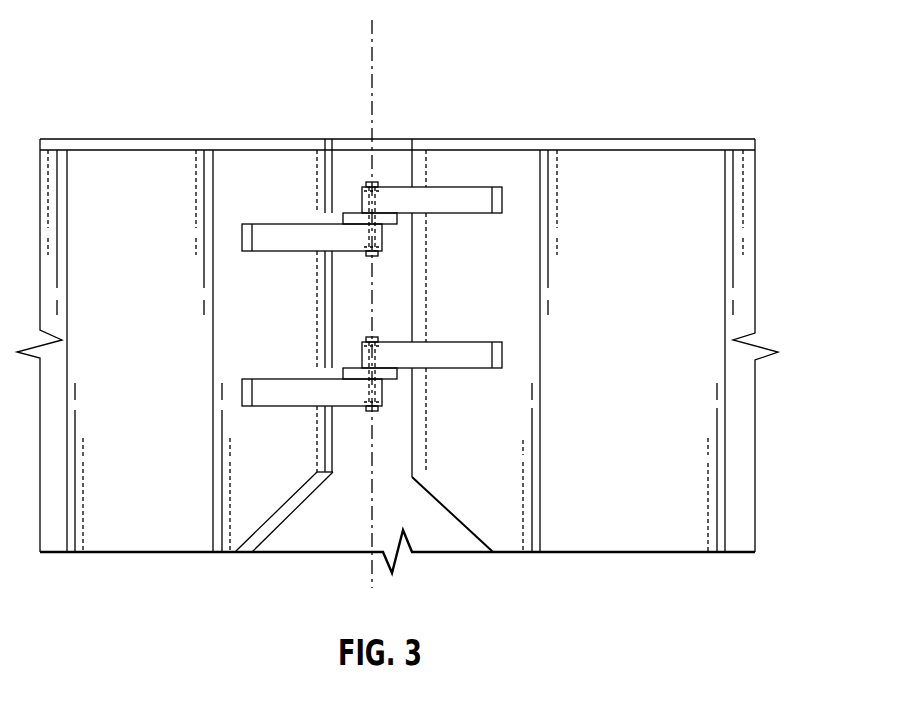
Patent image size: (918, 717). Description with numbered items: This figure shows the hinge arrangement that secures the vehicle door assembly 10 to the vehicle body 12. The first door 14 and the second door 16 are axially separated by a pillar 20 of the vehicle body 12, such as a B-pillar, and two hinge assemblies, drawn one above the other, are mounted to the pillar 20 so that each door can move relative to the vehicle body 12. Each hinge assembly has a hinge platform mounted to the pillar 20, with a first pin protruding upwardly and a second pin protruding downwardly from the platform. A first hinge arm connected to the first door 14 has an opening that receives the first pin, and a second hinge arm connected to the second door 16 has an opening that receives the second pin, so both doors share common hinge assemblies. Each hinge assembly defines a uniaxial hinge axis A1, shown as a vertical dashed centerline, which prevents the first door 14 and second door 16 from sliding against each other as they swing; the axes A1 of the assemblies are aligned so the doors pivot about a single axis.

The uniaxial hinge axis A1 is at (372, 28).
The vehicle door assembly 10 is at (701, 43).
The vehicle body 12 is at (339, 523).
The first door 14 is at (672, 160).
The second door 16 is at (82, 160).
The pillar 20 is at (346, 141).